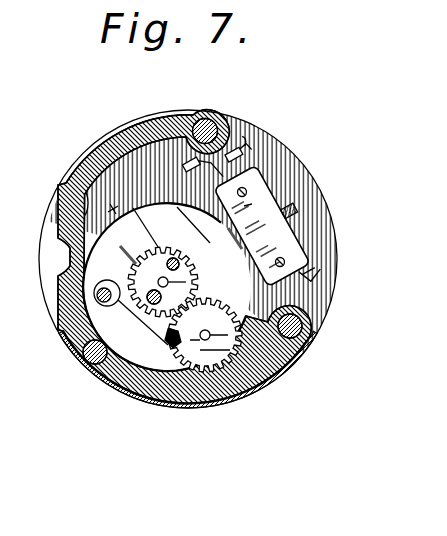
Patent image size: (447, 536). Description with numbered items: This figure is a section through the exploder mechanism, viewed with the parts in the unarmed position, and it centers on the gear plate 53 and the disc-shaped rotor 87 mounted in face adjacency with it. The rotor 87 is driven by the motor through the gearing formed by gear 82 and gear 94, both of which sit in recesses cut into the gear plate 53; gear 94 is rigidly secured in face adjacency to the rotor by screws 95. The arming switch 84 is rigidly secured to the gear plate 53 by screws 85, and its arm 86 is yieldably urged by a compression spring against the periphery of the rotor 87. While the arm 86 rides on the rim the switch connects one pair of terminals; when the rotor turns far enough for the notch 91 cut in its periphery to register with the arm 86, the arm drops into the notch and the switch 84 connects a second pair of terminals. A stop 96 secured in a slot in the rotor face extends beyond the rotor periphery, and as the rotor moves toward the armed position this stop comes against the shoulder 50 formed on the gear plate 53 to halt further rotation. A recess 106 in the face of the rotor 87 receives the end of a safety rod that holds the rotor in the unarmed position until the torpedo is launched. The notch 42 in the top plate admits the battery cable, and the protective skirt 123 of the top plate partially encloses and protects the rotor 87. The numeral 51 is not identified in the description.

The notch 42 is at (70, 256).
The shoulder 50 is at (78, 183).
The mounting bosses 51 is at (210, 130).
The gear plate 53 is at (316, 206).
The gear 82 is at (198, 337).
The arming switch 84 is at (256, 217).
The screws 85 is at (246, 190).
The arm 86 is at (256, 201).
The rotor 87 is at (177, 225).
The notch 91 is at (166, 339).
The gear 94 is at (162, 262).
The screws 95 is at (179, 266).
The stop 96 is at (114, 209).
The recess 106 is at (112, 283).
The protective skirt 123 is at (244, 400).